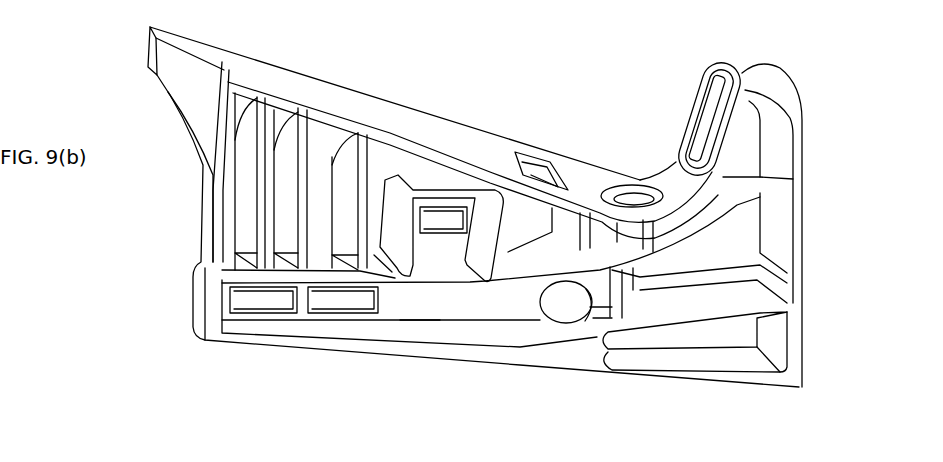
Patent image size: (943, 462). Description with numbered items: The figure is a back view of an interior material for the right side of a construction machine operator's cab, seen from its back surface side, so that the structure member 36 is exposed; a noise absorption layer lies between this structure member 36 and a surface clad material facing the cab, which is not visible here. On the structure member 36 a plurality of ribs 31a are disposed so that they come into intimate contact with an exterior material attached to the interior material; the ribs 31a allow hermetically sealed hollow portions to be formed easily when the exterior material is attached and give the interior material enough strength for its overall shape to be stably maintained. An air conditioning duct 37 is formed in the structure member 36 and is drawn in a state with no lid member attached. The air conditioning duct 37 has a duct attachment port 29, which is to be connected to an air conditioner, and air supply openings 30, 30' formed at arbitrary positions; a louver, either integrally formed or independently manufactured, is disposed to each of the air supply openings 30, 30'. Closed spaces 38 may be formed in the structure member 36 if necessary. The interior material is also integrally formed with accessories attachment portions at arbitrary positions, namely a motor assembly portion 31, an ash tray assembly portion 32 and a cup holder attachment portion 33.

The duct attachment port 29 is at (327, 323).
The air supply opening 30 is at (438, 167).
The air supply opening 30' is at (567, 360).
The motor assembly portion 31 is at (720, 108).
The ribs 31a is at (347, 240).
The ash tray assembly portion 32 is at (540, 150).
The cup holder attachment portion 33 is at (633, 185).
The structure member 36 is at (603, 357).
The air conditioning duct 37 is at (450, 307).
The closed spaces 38 is at (727, 247).